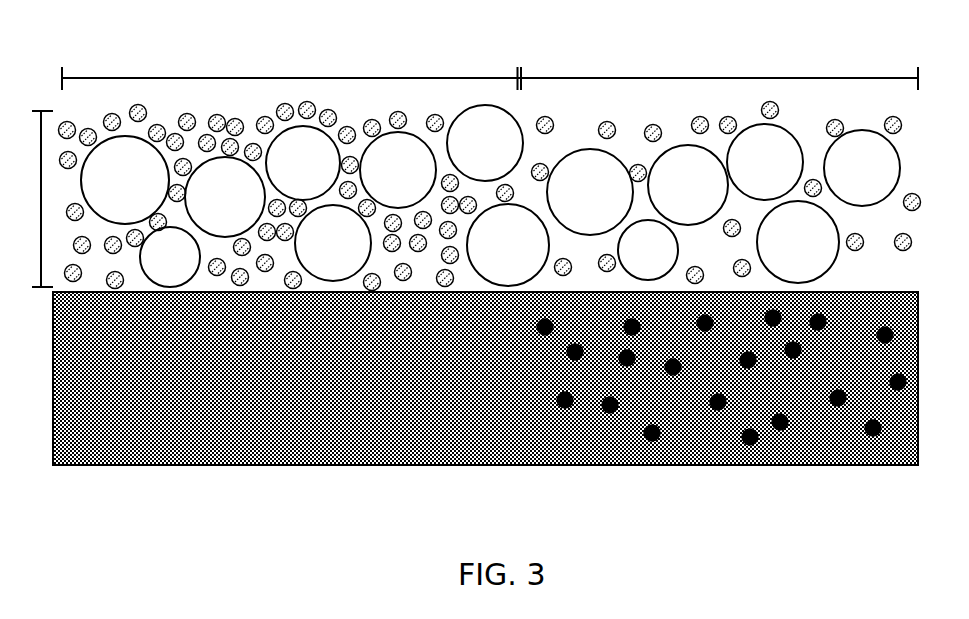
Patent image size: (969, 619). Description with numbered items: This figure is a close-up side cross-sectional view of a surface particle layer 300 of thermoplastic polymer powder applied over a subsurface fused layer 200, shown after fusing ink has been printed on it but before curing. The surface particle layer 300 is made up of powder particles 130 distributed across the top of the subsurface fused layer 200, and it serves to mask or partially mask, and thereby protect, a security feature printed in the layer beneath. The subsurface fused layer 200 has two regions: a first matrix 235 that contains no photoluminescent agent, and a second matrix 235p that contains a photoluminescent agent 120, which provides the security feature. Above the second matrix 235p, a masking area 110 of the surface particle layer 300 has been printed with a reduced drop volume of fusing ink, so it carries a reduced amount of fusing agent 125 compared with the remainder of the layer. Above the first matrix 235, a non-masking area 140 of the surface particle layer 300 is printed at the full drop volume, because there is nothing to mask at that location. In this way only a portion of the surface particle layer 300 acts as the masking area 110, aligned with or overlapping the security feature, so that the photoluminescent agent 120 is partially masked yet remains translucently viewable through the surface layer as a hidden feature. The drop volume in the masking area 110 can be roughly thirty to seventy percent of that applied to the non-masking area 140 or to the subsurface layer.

The subsurface fused layer 200 is at (240, 478).
The surface particle layer 300 is at (42, 160).
The non-masking area 140 is at (290, 78).
The masking area 110 is at (716, 78).
The powder particles 130 is at (487, 137).
The fusing agent 125 is at (834, 119).
The first matrix 235 is at (348, 437).
The second matrix 235p is at (692, 437).
The photoluminescent agent 120 is at (873, 428).